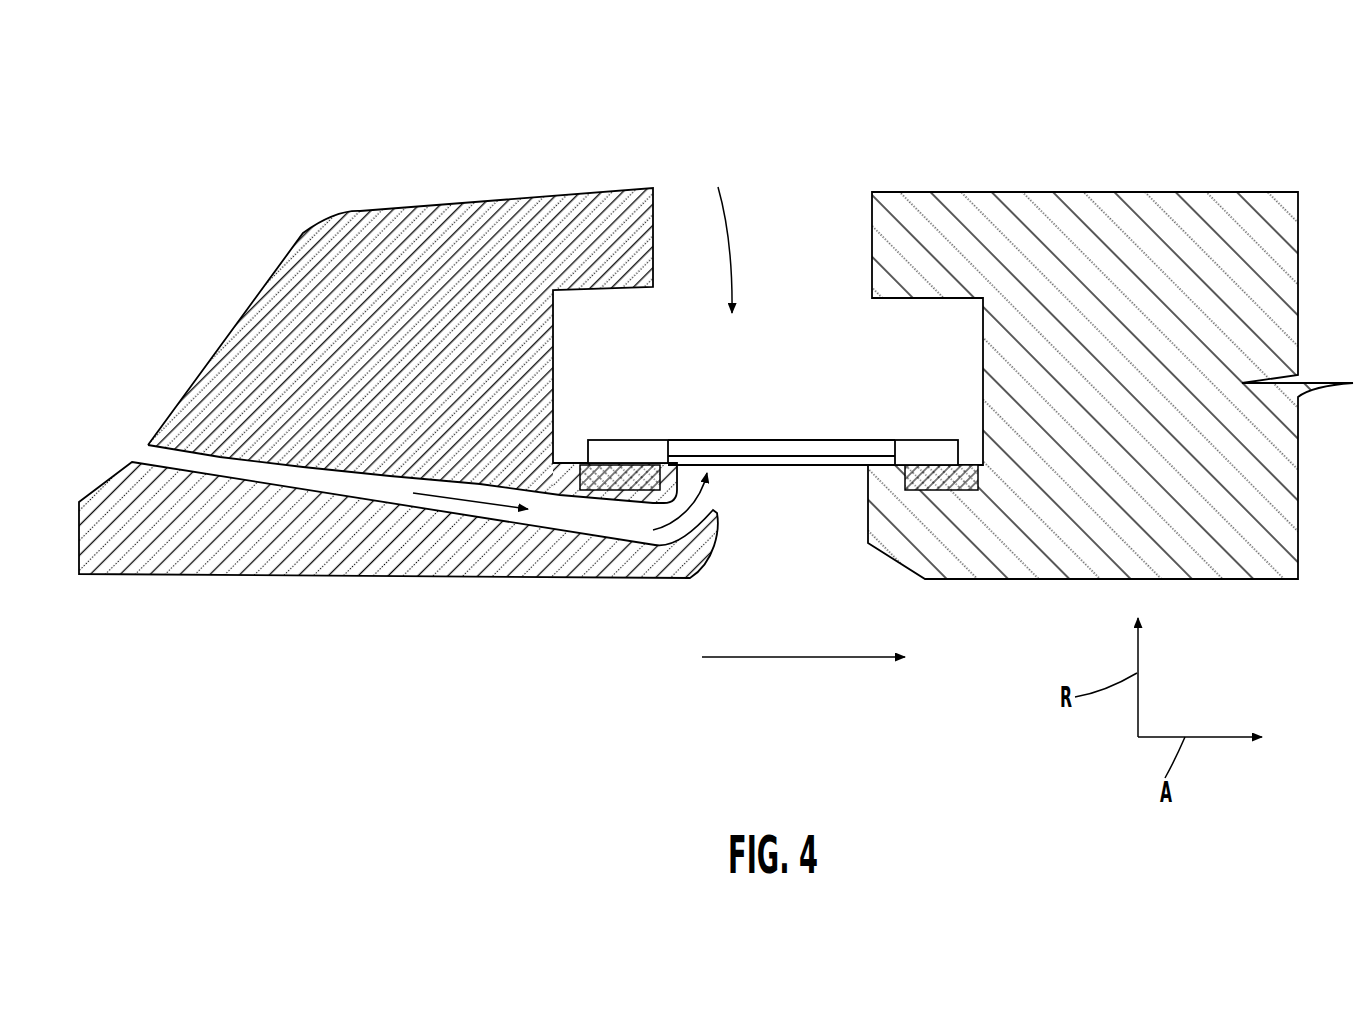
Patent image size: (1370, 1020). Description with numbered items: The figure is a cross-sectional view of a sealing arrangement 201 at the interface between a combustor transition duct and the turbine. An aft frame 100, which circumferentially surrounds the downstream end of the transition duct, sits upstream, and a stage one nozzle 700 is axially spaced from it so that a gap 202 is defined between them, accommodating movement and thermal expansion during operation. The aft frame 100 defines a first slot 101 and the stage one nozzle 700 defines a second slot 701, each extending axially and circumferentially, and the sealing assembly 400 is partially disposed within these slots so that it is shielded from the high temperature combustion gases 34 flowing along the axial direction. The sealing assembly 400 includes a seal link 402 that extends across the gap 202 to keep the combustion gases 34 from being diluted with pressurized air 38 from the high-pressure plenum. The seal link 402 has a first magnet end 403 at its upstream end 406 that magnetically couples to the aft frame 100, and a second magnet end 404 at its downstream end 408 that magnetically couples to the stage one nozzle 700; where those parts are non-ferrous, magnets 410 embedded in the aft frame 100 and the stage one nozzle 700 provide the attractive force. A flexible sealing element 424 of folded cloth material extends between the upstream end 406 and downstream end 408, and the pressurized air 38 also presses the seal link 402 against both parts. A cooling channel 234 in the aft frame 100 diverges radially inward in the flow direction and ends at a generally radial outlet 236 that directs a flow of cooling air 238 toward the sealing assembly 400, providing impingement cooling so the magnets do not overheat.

The aft frame 100 is at (457, 230).
The first slot 101 is at (577, 305).
The sealing arrangement 201 is at (301, 137).
The cooling channel 234 is at (405, 472).
The outlet 236 is at (702, 528).
The flow of cooling air 238 is at (470, 503).
The pressurized air 38 is at (732, 233).
The sealing assembly 400 is at (798, 202).
The seal link 402 is at (830, 445).
The first magnet end 403 is at (642, 445).
The second magnet end 404 is at (910, 443).
The upstream end 406 is at (602, 445).
The downstream end 408 is at (950, 438).
The magnets 410 is at (582, 478).
The flexible sealing element 424 is at (738, 445).
The stage one nozzle 700 is at (948, 222).
The second slot 701 is at (882, 462).
The gap 202 is at (804, 531).
The combustion gases 34 is at (810, 657).